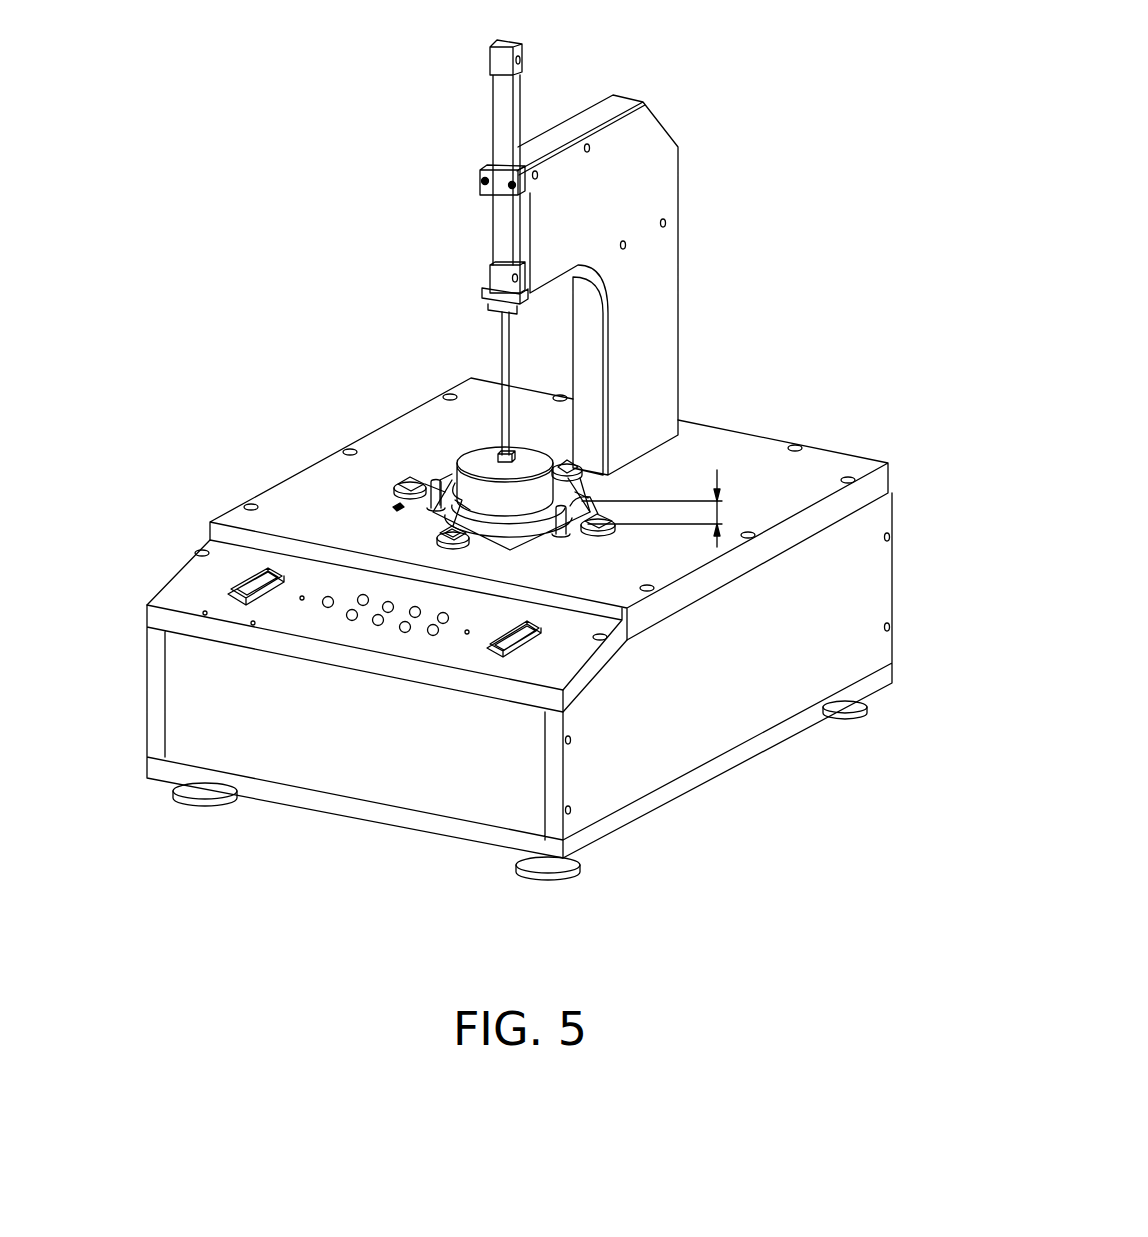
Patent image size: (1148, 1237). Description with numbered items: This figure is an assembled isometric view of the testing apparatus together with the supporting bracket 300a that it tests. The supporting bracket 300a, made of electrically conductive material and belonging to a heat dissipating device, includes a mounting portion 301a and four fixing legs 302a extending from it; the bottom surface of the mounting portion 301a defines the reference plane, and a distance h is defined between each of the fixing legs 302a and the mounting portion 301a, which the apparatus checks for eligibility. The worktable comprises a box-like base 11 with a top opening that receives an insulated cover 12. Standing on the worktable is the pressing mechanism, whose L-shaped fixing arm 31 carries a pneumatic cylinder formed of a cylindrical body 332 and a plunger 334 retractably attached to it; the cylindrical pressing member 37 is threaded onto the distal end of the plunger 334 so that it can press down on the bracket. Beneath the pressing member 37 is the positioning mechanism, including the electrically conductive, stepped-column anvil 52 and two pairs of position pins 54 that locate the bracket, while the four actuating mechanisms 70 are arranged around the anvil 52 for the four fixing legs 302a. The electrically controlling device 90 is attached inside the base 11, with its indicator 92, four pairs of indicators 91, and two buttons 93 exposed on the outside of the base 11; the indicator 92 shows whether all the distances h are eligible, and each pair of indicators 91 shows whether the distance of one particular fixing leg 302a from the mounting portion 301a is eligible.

The base 11 is at (688, 733).
The cover 12 is at (813, 468).
The fixing arm 31 is at (658, 152).
The cylindrical body 332 is at (505, 228).
The plunger 334 is at (507, 327).
The pressing member 37 is at (475, 453).
The anvil 52 is at (510, 520).
The position pins 54 is at (397, 508).
The actuating mechanisms 70 is at (623, 537).
The electrically controlling device 90 is at (193, 573).
The indicators 91 is at (353, 620).
The indicator 92 is at (323, 605).
The buttons 93 is at (253, 580).
The supporting bracket 300a is at (337, 340).
The mounting portion 301a is at (453, 473).
The fixing legs 302a is at (410, 477).
The distance h is at (663, 508).